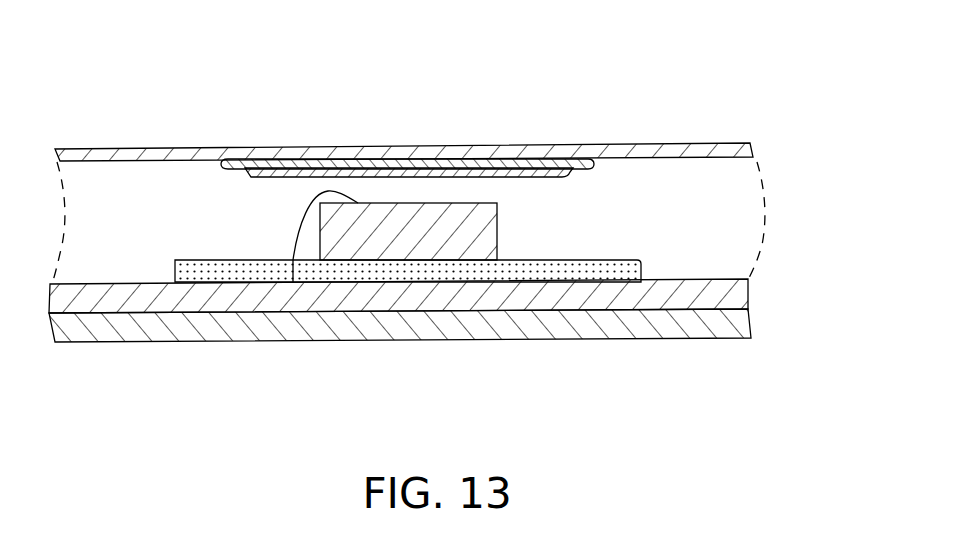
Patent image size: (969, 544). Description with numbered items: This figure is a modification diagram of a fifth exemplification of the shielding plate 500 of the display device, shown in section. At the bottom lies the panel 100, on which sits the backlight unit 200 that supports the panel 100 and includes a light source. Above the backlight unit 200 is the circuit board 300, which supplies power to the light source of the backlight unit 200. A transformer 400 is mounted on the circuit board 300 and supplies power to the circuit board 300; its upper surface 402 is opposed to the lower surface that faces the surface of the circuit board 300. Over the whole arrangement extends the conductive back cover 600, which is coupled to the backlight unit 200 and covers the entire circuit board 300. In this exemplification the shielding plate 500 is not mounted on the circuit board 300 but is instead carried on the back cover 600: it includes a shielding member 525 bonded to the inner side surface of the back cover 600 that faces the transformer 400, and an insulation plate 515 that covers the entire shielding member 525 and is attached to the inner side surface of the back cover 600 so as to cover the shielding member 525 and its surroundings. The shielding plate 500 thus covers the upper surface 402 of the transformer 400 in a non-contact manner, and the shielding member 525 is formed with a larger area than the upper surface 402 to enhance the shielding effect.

The panel 100 is at (737, 330).
The backlight unit 200 is at (740, 291).
The circuit board 300 is at (641, 270).
The transformer 400 is at (412, 243).
The upper surface 402 is at (293, 283).
The shielding plate 500 is at (407, 95).
The insulation plate 515 is at (340, 65).
The shielding member 525 is at (347, 146).
The conductive back cover 600 is at (630, 150).